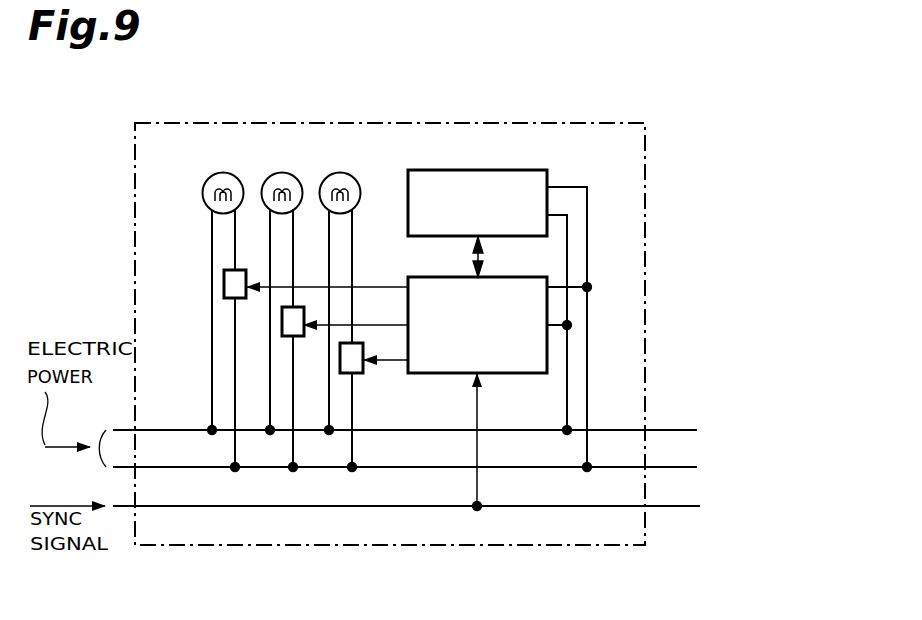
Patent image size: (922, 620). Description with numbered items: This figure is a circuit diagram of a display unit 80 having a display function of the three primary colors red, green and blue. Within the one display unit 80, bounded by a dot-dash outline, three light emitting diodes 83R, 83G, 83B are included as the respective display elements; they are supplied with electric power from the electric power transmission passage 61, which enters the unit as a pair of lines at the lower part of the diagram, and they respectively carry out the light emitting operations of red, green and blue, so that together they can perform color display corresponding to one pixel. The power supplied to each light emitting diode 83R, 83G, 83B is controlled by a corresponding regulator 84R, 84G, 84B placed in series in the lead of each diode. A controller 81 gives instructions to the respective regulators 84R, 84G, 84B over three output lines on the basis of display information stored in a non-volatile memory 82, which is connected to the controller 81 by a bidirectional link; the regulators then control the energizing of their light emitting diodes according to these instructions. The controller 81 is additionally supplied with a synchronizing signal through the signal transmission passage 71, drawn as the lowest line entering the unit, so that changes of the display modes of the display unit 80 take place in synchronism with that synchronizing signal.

The display unit 80 is at (283, 123).
The controller 81 is at (446, 277).
The non-volatile memory 82 is at (510, 170).
The light emitting diode 83R is at (225, 290).
The light emitting diode 83G is at (284, 290).
The light emitting diode 83B is at (342, 290).
The regulator 84R is at (238, 302).
The regulator 84G is at (297, 340).
The regulator 84B is at (355, 376).
The electric power transmission passage 61 is at (683, 467).
The signal transmission passage 71 is at (662, 506).